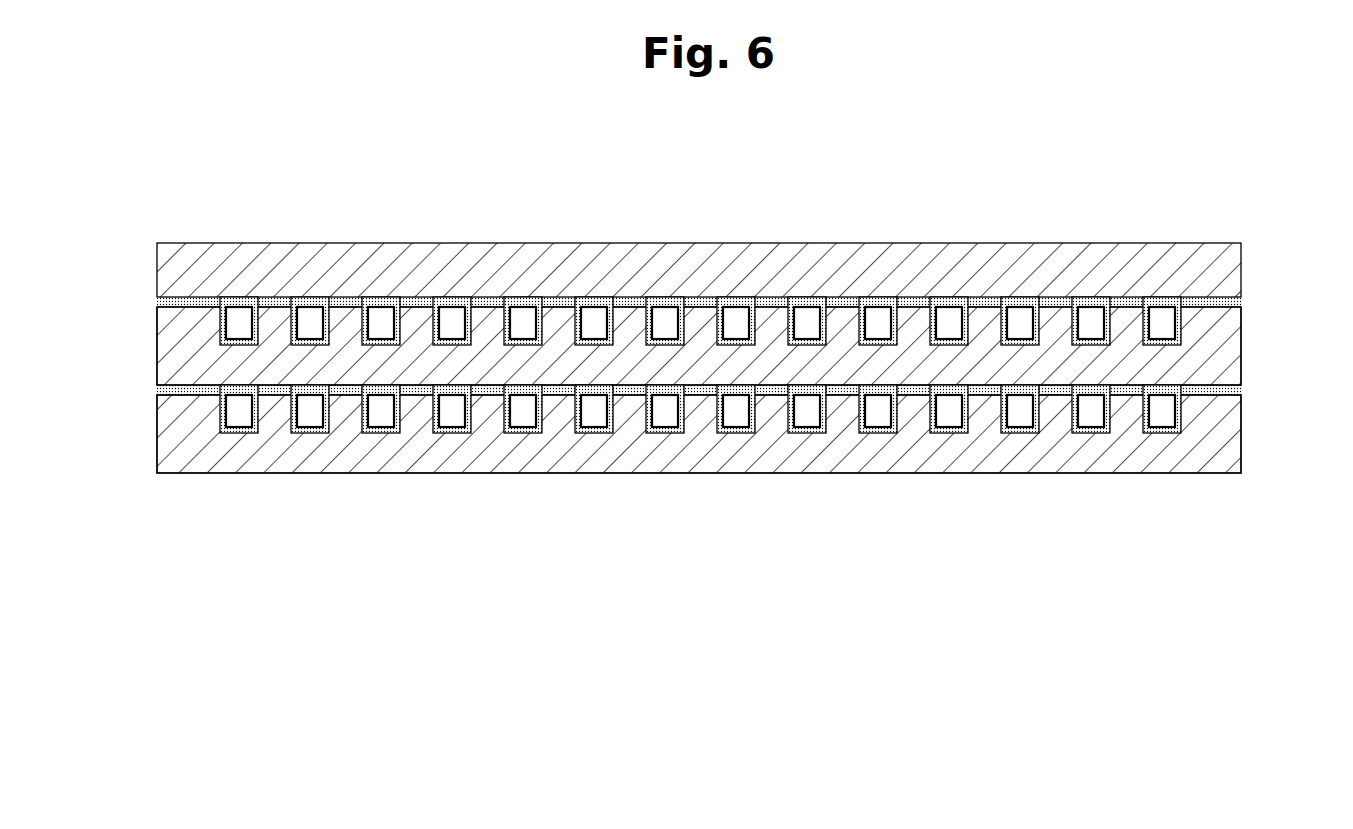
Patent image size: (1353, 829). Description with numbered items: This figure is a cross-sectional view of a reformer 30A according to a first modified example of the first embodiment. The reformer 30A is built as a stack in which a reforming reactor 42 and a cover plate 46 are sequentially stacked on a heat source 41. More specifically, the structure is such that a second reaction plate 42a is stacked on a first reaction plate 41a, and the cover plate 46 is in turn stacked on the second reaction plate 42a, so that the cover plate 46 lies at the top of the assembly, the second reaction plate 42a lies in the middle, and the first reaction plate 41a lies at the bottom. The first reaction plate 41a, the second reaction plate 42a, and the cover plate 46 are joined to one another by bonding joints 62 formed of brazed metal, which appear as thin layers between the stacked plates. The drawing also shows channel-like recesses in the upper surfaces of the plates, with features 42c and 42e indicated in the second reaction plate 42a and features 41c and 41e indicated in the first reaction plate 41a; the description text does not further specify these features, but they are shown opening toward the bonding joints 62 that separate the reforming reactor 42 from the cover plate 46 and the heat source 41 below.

The reformer 30A is at (702, 329).
The cover plate 46 is at (1241, 258).
The bonding joints 62 is at (141, 299).
The reforming reactor 42 is at (754, 414).
The second reaction plate 42a is at (141, 343).
The channel of second substrate 42c is at (310, 347).
The channel of second substrate 42e is at (1015, 347).
The heat source 41 is at (754, 458).
The first reaction plate 41a is at (141, 435).
The channel of first substrate 41c is at (382, 434).
The channel of first substrate 41e is at (1092, 434).